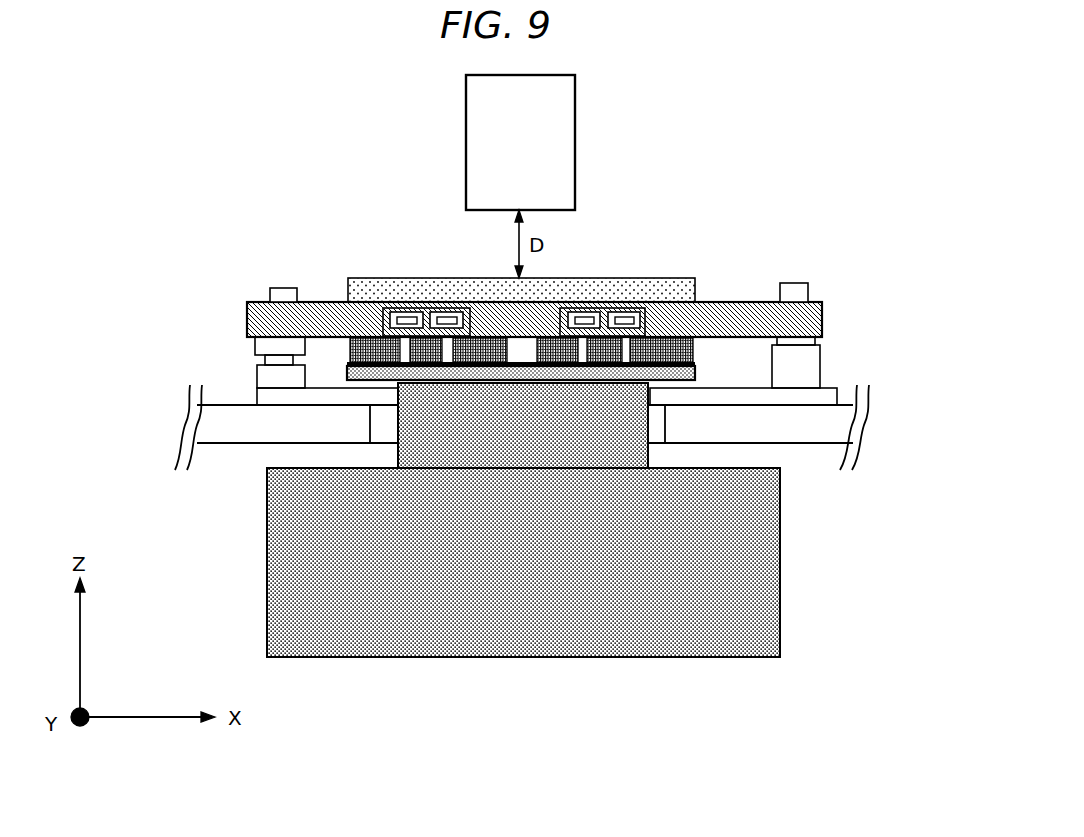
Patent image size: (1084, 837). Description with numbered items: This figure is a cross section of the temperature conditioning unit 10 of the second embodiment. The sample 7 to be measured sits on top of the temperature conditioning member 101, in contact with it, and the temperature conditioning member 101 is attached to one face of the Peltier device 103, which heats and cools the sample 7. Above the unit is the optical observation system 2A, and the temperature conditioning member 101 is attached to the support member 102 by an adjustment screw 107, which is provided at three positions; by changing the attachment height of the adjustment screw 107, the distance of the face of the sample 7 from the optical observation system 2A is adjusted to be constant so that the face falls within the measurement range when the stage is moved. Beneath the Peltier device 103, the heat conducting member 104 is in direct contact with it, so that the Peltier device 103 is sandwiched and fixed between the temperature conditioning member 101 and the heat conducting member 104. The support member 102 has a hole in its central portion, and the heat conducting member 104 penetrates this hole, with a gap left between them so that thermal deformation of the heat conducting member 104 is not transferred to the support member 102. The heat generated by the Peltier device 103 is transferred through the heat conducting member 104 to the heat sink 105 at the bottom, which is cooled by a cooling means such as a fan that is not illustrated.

The optical observation system 2A is at (563, 137).
The temperature conditioning unit 10 is at (382, 243).
The sample 7 is at (452, 293).
The temperature conditioning member 101 is at (330, 312).
The support member 102 is at (243, 405).
The Peltier device 103 is at (488, 350).
The heat conducting member 104 is at (613, 425).
The heat sink 105 is at (587, 645).
The adjustment screw 107 is at (283, 350).